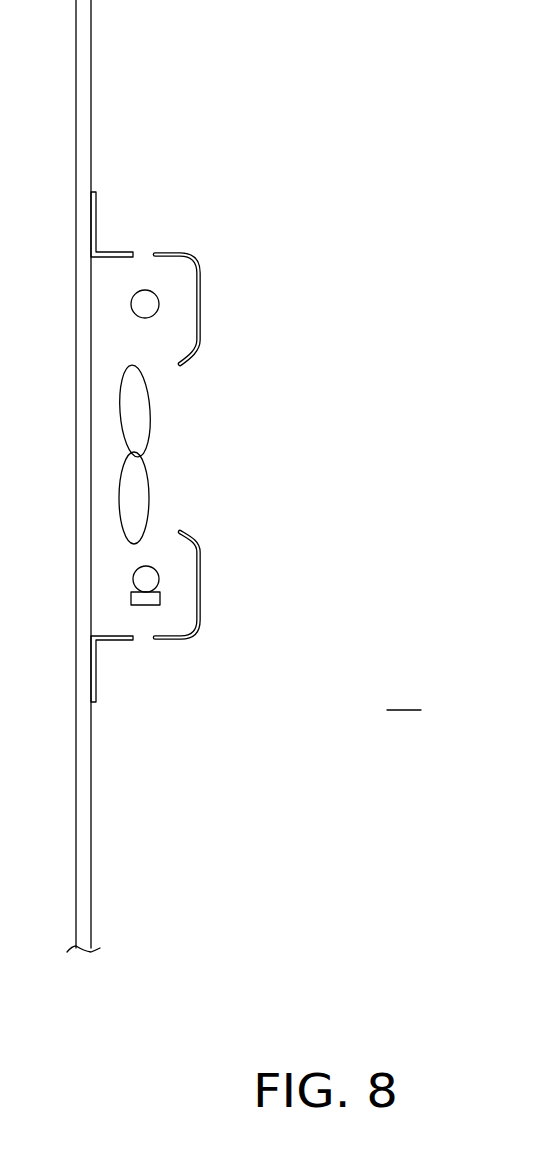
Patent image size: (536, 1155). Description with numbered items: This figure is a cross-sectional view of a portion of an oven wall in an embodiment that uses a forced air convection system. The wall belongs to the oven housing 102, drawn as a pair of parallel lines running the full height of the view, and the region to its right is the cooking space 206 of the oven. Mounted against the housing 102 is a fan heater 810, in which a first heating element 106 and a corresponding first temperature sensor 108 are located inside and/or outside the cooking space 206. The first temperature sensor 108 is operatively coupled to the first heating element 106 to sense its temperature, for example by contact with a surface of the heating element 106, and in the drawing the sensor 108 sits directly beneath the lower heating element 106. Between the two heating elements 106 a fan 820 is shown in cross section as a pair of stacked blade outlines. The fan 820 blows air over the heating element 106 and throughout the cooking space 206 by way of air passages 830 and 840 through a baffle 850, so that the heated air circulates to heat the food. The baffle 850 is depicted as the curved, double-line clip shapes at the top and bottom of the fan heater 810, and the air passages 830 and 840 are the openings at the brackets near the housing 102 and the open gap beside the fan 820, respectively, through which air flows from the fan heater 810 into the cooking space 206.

The housing 102 is at (91, 95).
The first heating element 106 is at (159, 300).
The first temperature sensor 108 is at (161, 598).
The cooking space 206 is at (404, 697).
The fan heater 810 is at (237, 441).
The fan 820 is at (140, 395).
The air passage 830 is at (145, 252).
The air passage 840 is at (239, 454).
The baffle 850 is at (200, 337).